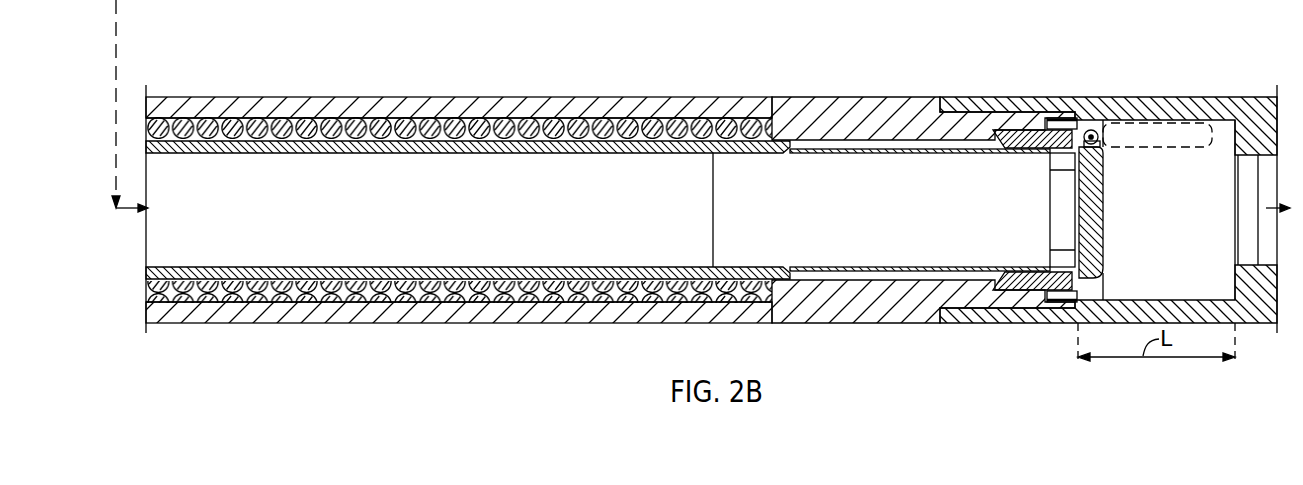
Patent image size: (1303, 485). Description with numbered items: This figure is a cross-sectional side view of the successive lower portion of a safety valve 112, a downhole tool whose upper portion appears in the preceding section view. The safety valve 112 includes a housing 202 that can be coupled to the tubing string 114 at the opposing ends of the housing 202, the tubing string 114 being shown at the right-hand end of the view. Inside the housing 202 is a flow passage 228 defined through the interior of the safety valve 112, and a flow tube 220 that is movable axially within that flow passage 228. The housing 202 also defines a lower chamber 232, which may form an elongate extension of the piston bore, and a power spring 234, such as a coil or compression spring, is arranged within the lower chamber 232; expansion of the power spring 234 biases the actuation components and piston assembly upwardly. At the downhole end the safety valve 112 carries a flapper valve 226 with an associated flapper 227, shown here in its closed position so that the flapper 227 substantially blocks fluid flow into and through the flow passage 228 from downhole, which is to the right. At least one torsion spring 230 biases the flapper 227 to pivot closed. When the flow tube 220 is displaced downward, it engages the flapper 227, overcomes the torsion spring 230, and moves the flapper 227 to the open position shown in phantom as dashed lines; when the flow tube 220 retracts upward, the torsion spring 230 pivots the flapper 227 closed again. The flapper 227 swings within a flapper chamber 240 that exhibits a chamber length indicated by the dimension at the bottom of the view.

The safety valve 112 is at (823, 64).
The tubing string 114 is at (1180, 100).
The housing 202 is at (572, 102).
The flow tube 220 is at (474, 154).
The flapper valve 226 is at (1030, 184).
The flapper 227 is at (1102, 198).
The flow passage 228 is at (921, 212).
The torsion spring 230 is at (1091, 129).
The lower chamber 232 is at (343, 118).
The power spring 234 is at (437, 120).
The flapper chamber 240 is at (1181, 262).